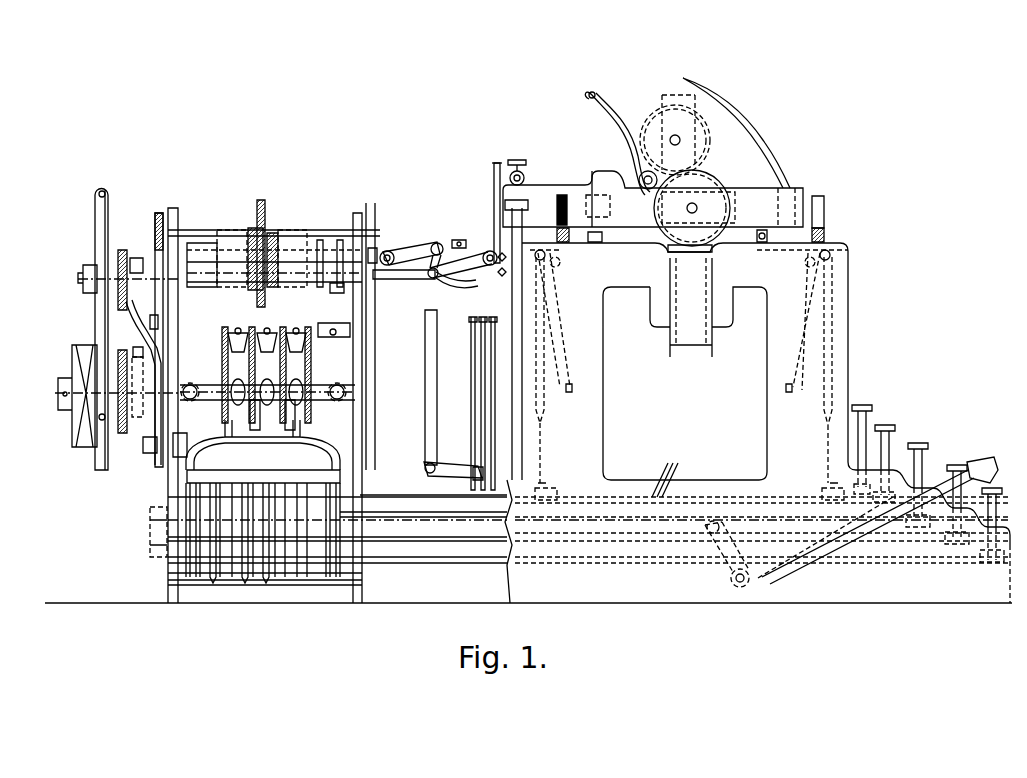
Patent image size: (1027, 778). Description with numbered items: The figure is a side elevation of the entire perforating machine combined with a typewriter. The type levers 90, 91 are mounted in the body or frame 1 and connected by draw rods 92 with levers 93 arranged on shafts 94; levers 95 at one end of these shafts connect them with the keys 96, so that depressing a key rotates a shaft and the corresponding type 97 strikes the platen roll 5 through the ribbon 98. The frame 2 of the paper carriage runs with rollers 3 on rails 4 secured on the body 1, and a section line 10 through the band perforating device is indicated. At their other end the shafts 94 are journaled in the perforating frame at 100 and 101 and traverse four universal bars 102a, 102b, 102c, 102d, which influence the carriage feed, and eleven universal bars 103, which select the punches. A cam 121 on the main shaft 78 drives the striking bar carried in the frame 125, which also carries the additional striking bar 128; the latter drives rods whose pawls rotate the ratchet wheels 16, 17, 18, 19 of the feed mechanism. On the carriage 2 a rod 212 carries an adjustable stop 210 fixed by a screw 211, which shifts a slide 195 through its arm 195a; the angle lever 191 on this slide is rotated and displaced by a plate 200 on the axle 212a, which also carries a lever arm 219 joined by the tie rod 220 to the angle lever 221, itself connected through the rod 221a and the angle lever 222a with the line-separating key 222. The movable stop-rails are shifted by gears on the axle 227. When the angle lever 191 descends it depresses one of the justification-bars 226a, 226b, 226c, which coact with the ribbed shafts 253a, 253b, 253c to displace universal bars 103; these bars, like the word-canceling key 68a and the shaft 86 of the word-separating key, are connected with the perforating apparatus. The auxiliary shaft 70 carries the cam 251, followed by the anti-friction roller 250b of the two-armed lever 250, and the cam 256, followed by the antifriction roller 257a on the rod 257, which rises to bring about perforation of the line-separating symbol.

The body or frame 1 is at (848, 298).
The frame of the paper carriage 2 is at (600, 192).
The rollers 3 is at (413, 205).
The rails 4 is at (826, 240).
The platen roll 5 is at (705, 185).
The section line 10 is at (340, 371).
The ratchet wheel 16 is at (220, 328).
The ratchet wheel 17 is at (252, 327).
The ratchet wheel 18 is at (282, 327).
The ratchet wheel 19 is at (307, 327).
The word-canceling key 68a is at (866, 405).
The auxiliary shaft 70 is at (85, 280).
The main shaft 78 is at (58, 395).
The shaft 86 is at (996, 488).
The type levers 90 is at (562, 352).
The type levers 91 is at (803, 347).
The draw rods 92 is at (545, 413).
The levers 93 is at (548, 493).
The shafts 94 is at (671, 472).
The levers 95 is at (893, 478).
The keys 96 is at (917, 443).
The type 97 is at (573, 389).
The ribbon 98 is at (708, 250).
The journal 100 is at (356, 548).
The journal 101 is at (170, 553).
The universal bar 102a is at (338, 578).
The universal bar 102b is at (327, 578).
The universal bar 102c is at (198, 578).
The universal bar 102d is at (188, 578).
The universal bars 103 is at (265, 583).
The cam 121 is at (260, 416).
The frame 125 is at (192, 385).
The additional striking bar 128 is at (295, 415).
The angle lever 191 is at (470, 290).
The slide 195 is at (505, 262).
The arm 195a is at (494, 200).
The plate 200 is at (458, 240).
The adjustable stop 210 is at (498, 165).
The screw 211 is at (520, 160).
The rod 212 is at (525, 175).
The axle 212a is at (388, 250).
The lever arm 219 is at (420, 243).
The tie rod 220 is at (425, 441).
The angle lever 221 is at (448, 465).
The rod 221a is at (617, 525).
The line-separating key 222 is at (978, 460).
The angle lever 222a is at (790, 574).
The justification-bar 226a is at (470, 328).
The justification-bar 226b is at (481, 358).
The justification-bar 226c is at (491, 368).
The axle 227 is at (408, 280).
The two-armed lever 250 is at (388, 246).
The anti-friction roller 250b is at (368, 255).
The cam 251 is at (332, 290).
The shaft 253a is at (442, 541).
The shaft 253b is at (450, 500).
The shaft 253c is at (400, 495).
The cam 256 is at (157, 252).
The rod 257 is at (152, 333).
The antifriction roller 257a is at (150, 322).